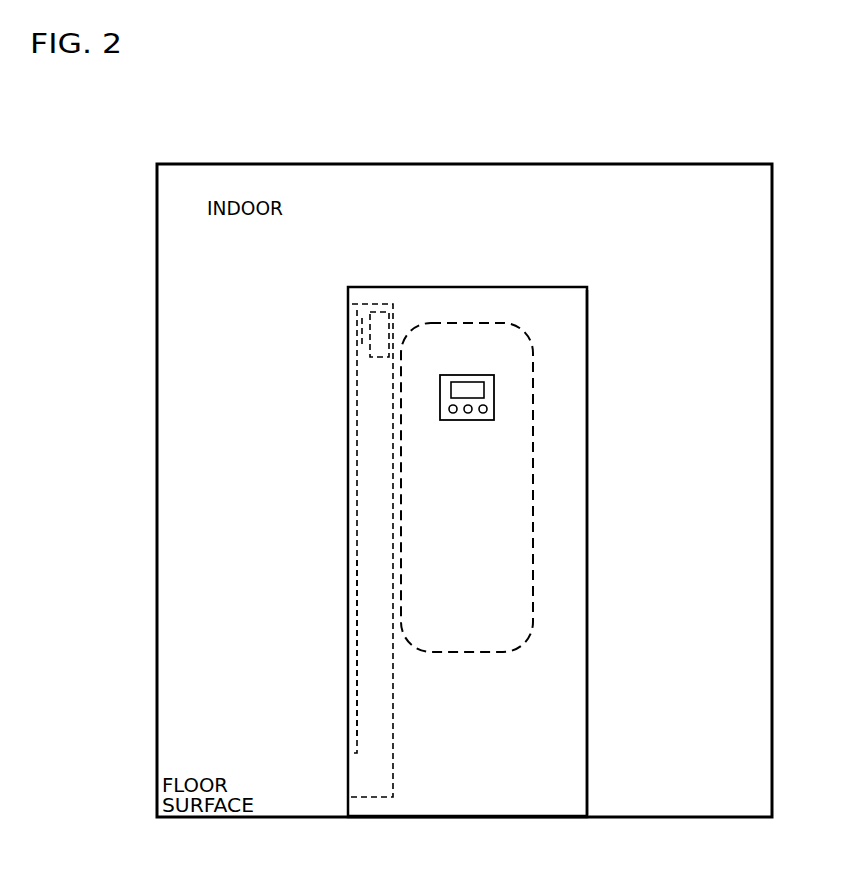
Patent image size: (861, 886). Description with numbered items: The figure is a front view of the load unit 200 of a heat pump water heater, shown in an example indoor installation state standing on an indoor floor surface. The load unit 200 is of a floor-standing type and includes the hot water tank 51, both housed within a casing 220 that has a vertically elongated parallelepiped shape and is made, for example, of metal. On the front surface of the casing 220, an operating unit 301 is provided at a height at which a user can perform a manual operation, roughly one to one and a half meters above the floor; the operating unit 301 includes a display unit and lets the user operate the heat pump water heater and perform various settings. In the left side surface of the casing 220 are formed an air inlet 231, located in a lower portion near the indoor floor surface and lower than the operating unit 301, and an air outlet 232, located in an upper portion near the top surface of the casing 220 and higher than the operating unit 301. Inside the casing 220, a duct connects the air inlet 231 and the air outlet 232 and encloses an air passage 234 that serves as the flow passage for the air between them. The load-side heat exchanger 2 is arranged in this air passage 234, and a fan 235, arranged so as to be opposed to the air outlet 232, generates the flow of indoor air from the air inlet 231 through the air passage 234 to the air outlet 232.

The load unit 200 is at (477, 287).
The casing 220 is at (588, 447).
The air inlet 231 is at (347, 786).
The air outlet 232 is at (353, 318).
The fan 235 is at (356, 348).
The load-side heat exchanger 2 is at (370, 348).
The air passage 234 is at (367, 549).
The hot water tank 51 is at (402, 503).
The operating unit 301 is at (494, 396).